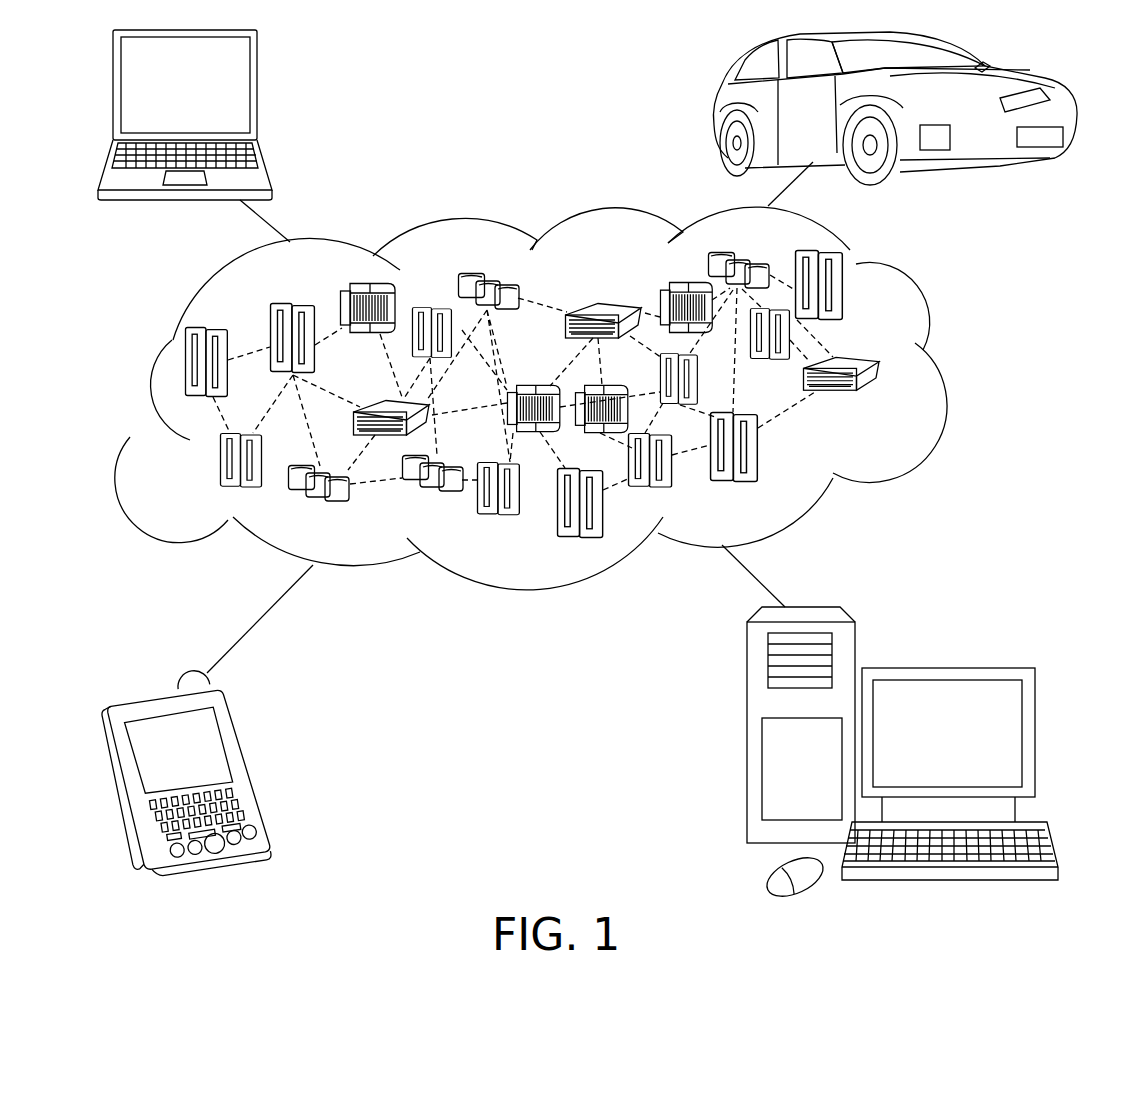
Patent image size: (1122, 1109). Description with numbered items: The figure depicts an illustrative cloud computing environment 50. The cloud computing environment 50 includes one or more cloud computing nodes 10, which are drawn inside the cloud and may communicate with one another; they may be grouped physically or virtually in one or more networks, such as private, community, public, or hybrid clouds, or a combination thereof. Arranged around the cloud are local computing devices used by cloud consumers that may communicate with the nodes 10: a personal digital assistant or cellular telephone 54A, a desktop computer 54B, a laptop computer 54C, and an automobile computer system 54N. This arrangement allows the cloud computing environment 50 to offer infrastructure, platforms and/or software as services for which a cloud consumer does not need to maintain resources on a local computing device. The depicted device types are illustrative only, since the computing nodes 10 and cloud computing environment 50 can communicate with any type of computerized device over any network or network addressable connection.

The cloud computing node 10 is at (885, 403).
The cloud computing environment 50 is at (950, 372).
The personal digital assistant or cellular telephone 54A is at (247, 765).
The desktop computer 54B is at (943, 667).
The laptop computer 54C is at (258, 92).
The automobile computer system 54N is at (717, 113).